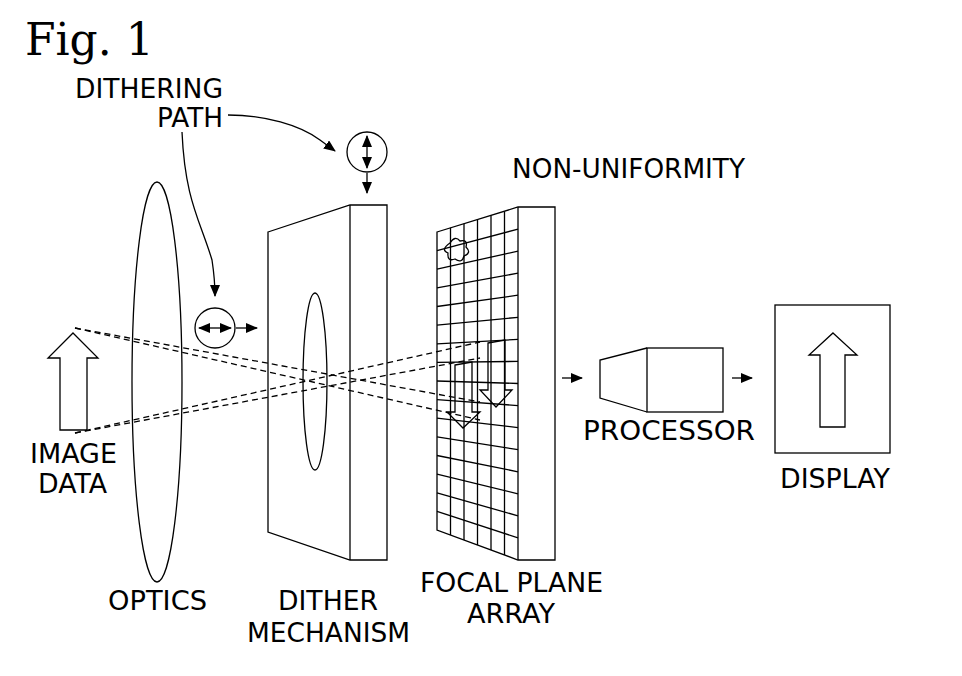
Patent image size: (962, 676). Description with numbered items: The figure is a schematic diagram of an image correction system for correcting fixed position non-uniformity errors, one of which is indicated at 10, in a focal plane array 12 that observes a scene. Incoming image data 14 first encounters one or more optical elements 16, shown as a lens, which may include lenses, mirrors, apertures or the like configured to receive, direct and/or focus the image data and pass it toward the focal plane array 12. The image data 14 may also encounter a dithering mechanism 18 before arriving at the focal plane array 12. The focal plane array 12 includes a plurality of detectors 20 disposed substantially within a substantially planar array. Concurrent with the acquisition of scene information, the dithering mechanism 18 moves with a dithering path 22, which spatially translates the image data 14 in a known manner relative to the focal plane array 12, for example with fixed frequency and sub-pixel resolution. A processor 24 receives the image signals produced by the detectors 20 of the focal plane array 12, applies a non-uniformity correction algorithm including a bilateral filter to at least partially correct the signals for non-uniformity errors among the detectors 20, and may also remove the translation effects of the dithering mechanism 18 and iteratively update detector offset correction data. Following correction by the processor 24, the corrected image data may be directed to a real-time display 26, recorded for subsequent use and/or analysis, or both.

The fixed position non-uniformity 10 is at (462, 240).
The focal plane array 12 is at (477, 357).
The image data 14 is at (55, 350).
The optical elements 16 is at (143, 217).
The dithering mechanism 18 is at (285, 228).
The detectors 20 is at (457, 322).
The dithering path 22 is at (226, 313).
The processor 24 is at (677, 348).
The display 26 is at (845, 305).